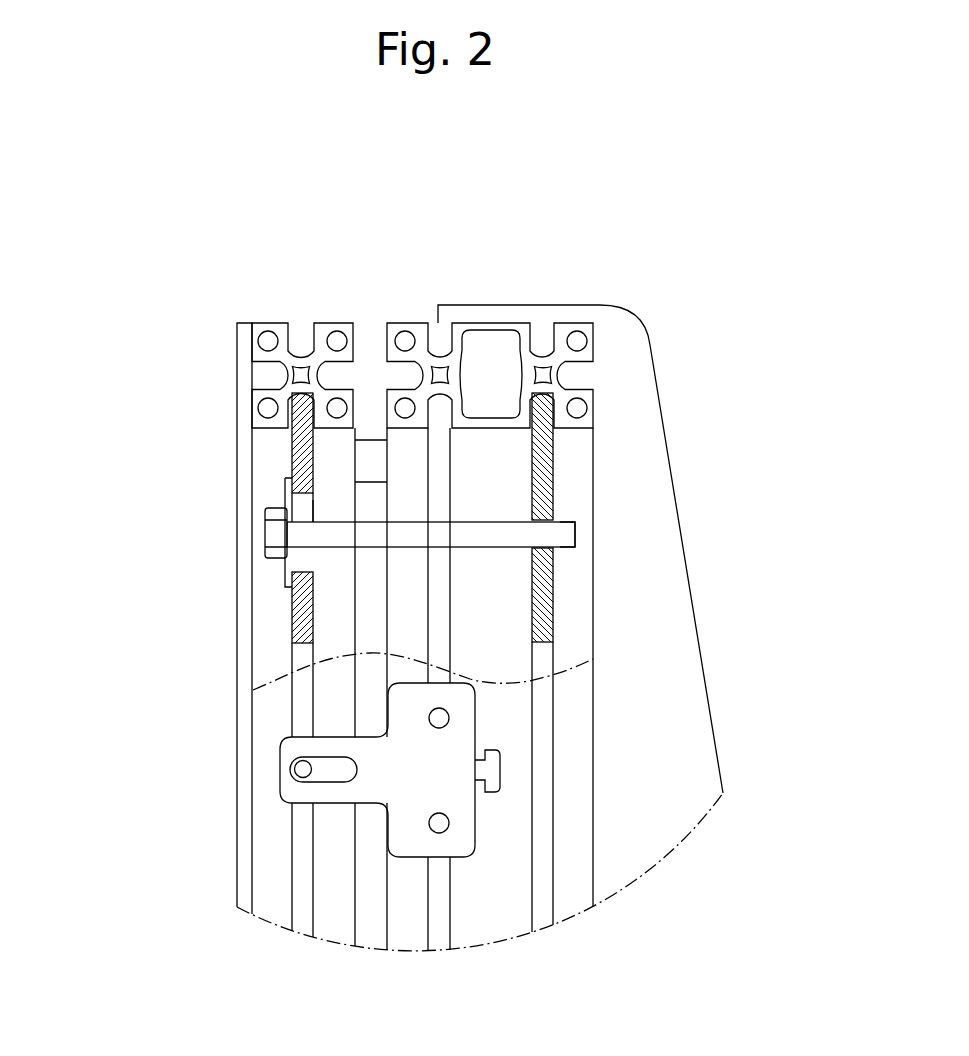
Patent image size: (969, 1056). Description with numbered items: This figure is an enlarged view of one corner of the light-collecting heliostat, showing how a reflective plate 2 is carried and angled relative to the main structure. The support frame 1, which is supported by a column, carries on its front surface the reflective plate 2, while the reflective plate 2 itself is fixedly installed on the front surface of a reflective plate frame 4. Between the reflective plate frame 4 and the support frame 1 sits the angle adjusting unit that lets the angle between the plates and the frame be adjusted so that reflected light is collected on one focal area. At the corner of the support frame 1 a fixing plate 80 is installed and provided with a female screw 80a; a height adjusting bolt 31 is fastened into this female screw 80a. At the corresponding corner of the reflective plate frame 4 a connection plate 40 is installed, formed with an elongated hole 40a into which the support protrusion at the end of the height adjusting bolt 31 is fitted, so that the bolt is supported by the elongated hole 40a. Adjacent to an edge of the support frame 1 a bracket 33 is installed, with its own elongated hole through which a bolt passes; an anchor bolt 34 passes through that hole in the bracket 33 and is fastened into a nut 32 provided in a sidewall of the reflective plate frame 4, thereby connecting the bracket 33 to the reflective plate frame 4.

The support frame 1 is at (518, 328).
The reflective plate 2 is at (242, 665).
The reflective plate frame 4 is at (283, 330).
The connection plate 40 is at (290, 461).
The elongated hole 40a is at (300, 515).
The fixing plate 80 is at (553, 495).
The female screw 80a is at (547, 524).
The height adjusting bolt 31 is at (340, 540).
The nut 32 is at (295, 775).
The bracket 33 is at (373, 795).
The anchor bolt 34 is at (500, 773).